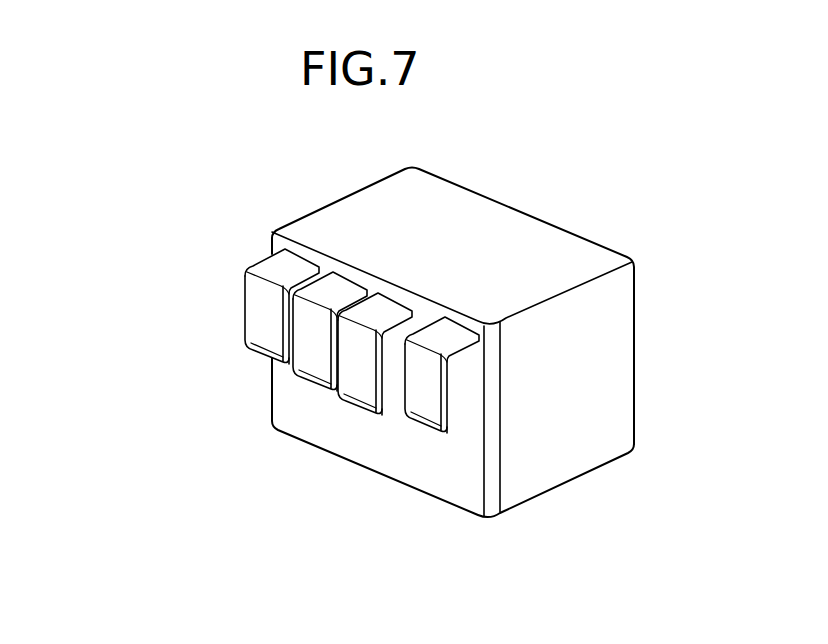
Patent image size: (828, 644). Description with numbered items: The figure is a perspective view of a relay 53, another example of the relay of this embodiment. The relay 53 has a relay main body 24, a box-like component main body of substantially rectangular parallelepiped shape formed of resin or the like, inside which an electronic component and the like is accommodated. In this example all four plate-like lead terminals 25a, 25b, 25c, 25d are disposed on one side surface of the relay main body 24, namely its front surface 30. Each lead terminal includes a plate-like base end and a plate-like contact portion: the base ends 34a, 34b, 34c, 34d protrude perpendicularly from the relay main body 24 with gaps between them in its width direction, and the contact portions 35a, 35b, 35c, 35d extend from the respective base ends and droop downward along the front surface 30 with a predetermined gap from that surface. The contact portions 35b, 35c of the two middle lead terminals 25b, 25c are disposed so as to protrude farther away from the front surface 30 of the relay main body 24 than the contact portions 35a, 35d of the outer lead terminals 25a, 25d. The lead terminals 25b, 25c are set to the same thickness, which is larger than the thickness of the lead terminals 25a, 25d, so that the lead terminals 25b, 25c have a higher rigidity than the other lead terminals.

The relay 53 is at (546, 194).
The relay main body 24 is at (463, 205).
The front surface 30 is at (399, 458).
The lead terminal 25a is at (141, 226).
The lead terminal 25b is at (141, 318).
The lead terminal 25c is at (141, 410).
The lead terminal 25d is at (141, 503).
The base end 34a is at (281, 260).
The base end 34b is at (330, 291).
The base end 34c is at (385, 310).
The base end 34d is at (442, 330).
The contact portion 35a is at (262, 293).
The contact portion 35b is at (302, 325).
The contact portion 35c is at (352, 352).
The contact portion 35d is at (418, 383).